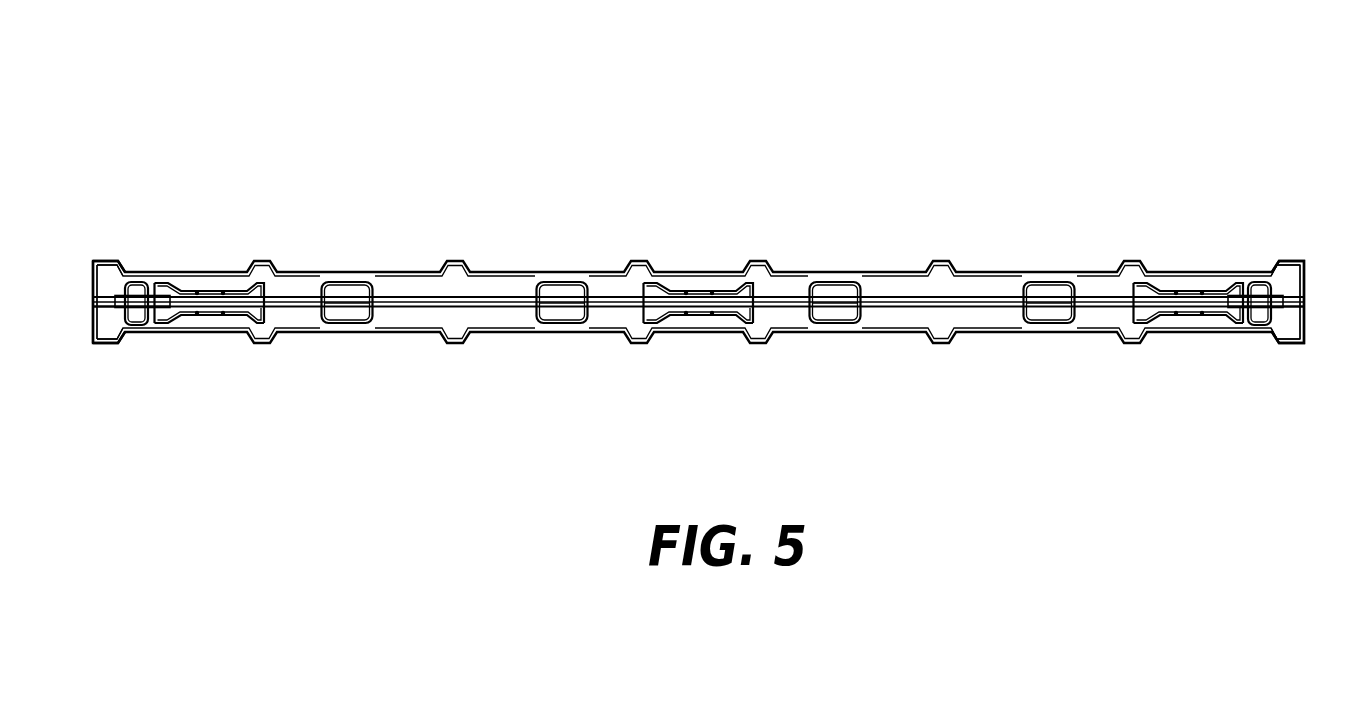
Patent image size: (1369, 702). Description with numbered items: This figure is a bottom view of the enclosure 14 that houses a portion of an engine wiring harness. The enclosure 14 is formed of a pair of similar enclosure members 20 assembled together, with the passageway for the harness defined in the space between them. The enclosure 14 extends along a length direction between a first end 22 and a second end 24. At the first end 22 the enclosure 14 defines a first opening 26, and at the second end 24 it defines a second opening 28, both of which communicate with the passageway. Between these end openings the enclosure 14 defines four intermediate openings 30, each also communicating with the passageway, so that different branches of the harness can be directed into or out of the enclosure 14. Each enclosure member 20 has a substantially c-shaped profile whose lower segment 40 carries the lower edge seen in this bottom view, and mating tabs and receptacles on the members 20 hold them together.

The enclosure 14 is at (1094, 89).
The enclosure members 20 is at (902, 199).
The first end 22 is at (92, 248).
The second end 24 is at (1311, 246).
The first opening 26 is at (93, 297).
The second opening 28 is at (1305, 302).
The intermediate openings 30 is at (350, 310).
The lower segment 40 is at (418, 288).